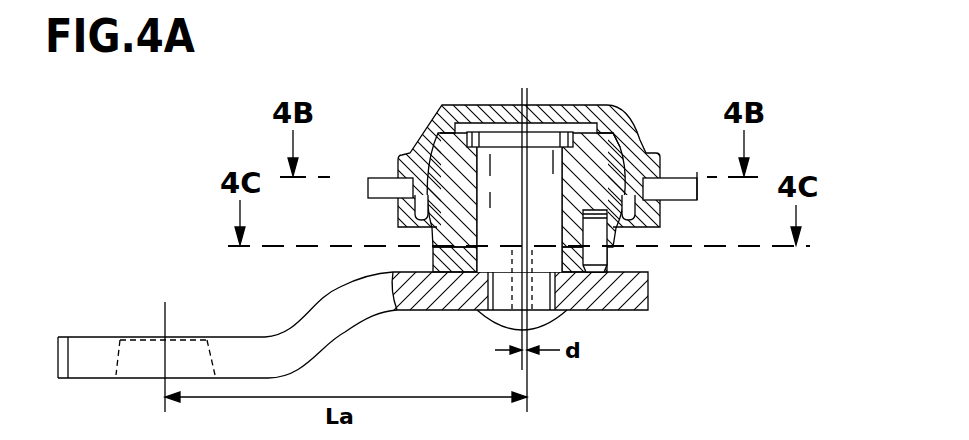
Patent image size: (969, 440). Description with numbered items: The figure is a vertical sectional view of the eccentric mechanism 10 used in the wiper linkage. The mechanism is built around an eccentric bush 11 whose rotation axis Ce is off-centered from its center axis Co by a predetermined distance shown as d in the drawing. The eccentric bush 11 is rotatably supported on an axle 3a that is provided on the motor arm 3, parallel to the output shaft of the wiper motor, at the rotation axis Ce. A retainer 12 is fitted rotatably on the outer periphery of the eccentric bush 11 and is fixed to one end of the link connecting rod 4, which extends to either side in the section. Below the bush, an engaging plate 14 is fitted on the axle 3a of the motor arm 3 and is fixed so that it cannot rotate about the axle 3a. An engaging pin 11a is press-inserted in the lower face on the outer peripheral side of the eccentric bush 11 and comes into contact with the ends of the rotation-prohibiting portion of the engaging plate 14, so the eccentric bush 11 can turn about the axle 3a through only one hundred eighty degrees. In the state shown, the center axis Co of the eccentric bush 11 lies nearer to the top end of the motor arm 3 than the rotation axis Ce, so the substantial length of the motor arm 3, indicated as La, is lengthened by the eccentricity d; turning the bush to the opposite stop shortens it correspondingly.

The motor arm 3 is at (343, 332).
The axle 3a is at (498, 192).
The link connecting rod 4 is at (678, 183).
The eccentric mechanism 10 is at (503, 148).
The eccentric bush 11 is at (603, 160).
The engaging pin 11a is at (598, 253).
The retainer 12 is at (435, 143).
The engaging plate 14 is at (442, 261).
The rotation axis Ce is at (520, 94).
The center axis Co is at (529, 94).